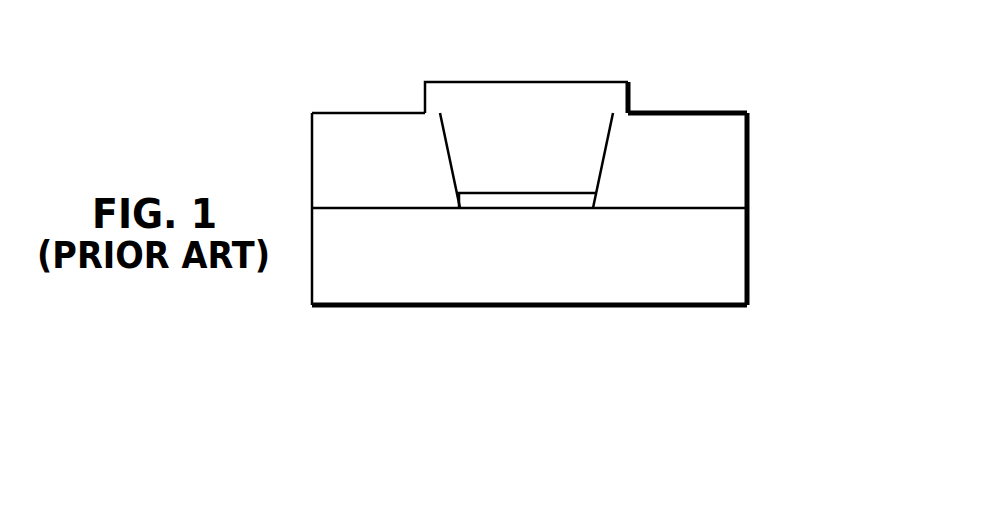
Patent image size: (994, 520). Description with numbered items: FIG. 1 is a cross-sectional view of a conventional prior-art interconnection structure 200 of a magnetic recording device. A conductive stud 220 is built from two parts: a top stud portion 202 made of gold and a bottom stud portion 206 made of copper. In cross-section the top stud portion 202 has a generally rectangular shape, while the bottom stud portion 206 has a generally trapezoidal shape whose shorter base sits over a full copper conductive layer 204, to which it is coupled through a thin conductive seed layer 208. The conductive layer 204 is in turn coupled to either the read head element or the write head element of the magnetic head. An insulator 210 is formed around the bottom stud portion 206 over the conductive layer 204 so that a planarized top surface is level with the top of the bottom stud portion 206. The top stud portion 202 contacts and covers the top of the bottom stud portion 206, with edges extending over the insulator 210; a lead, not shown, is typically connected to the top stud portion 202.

The interconnection structure 200 is at (553, 375).
The top stud portion 202 is at (560, 90).
The conductive layer 204 is at (727, 252).
The bottom stud portion 206 is at (575, 150).
The seed layer 208 is at (585, 199).
The insulator 210 is at (372, 125).
The conductive stud 220 is at (697, 63).